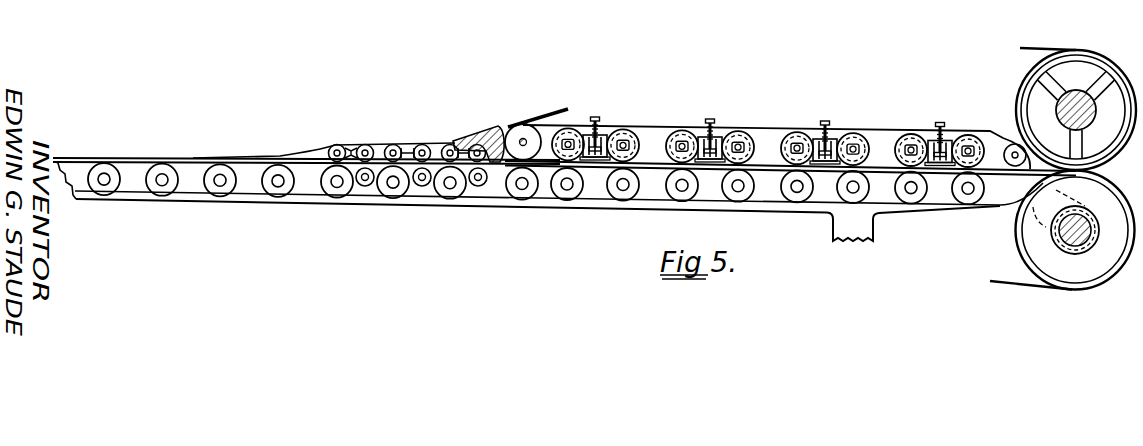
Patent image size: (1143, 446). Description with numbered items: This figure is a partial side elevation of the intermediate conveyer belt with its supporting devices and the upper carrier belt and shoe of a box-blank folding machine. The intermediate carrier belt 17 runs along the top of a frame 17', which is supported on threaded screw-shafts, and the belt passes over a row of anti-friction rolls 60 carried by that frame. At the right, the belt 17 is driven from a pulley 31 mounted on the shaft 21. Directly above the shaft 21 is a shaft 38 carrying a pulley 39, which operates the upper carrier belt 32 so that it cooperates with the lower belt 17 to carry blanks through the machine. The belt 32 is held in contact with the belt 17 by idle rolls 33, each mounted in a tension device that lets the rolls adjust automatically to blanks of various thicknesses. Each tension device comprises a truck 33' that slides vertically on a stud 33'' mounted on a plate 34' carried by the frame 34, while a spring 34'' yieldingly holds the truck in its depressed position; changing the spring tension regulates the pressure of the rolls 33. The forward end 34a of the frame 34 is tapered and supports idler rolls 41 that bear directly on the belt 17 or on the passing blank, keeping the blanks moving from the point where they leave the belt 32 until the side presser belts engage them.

The intermediate carrier belt 17 is at (526, 188).
The frame 17' is at (559, 218).
The anti-friction rolls 60 is at (518, 196).
The forward end of the frame 34a is at (262, 157).
The idler rolls 41 is at (395, 145).
The frame 34 is at (478, 123).
The upper carrier belt 32 is at (553, 110).
The spring 34'' is at (776, 130).
The plate 34' is at (790, 235).
The idle rolls 33 is at (768, 127).
The stud 33'' is at (767, 110).
The truck 33' is at (767, 109).
The pulley 39 is at (1048, 63).
The shaft 38 is at (1041, 79).
The pulley 31 is at (1017, 248).
The shaft 21 is at (1068, 244).